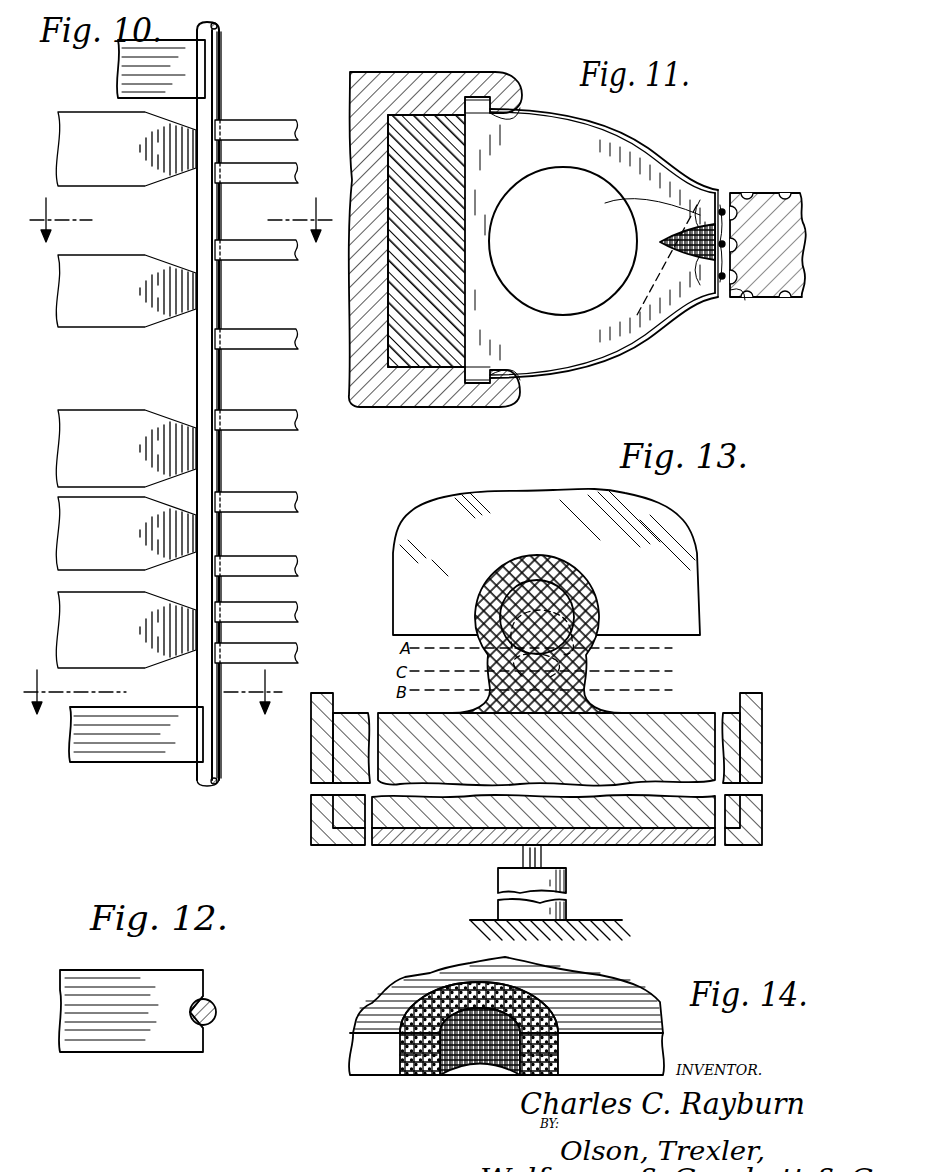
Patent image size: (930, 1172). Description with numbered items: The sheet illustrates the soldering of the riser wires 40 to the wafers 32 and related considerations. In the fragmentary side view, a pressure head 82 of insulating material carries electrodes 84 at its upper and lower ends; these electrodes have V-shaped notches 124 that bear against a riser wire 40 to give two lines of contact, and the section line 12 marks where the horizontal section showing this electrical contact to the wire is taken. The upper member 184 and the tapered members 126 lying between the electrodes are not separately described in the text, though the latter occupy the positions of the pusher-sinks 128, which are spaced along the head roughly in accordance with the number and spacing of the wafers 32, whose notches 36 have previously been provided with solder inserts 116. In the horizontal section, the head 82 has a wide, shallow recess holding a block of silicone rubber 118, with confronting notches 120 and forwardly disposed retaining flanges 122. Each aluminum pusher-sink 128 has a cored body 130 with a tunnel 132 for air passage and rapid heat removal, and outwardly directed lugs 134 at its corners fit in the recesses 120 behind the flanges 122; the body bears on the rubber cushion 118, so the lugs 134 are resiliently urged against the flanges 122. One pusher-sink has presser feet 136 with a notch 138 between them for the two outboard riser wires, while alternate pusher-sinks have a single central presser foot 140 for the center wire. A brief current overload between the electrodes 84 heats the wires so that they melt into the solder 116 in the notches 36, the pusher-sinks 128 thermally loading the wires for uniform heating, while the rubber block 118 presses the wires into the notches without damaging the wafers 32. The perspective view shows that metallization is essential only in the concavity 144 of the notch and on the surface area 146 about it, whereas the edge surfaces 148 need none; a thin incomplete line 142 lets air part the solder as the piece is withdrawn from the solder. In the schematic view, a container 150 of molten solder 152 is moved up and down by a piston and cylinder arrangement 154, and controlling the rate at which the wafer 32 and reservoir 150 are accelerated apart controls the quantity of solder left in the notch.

In FIG. 10, the section line 12 is at (171, 444).
In FIG. 10, the wafer 32 is at (275, 173).
In FIG. 13, the wafer 32 is at (676, 578).
In FIG. 14, the wafer 32 is at (610, 990).
In FIG. 11, the notch 36 is at (758, 195).
In FIG. 13, the notch 36 is at (568, 596).
In FIG. 14, the notch 36 is at (446, 963).
In FIG. 10, the riser wire 40 is at (212, 105).
In FIG. 11, the riser wire 40 is at (722, 208).
In FIG. 12, the riser wire 40 is at (217, 1009).
In FIG. 11, the pressure head 82 is at (400, 82).
In FIG. 10, the electrode 84 is at (138, 762).
In FIG. 12, the electrode 84 is at (127, 1036).
In FIG. 11, the solder insert 116 is at (742, 300).
In FIG. 13, the solder insert 116 is at (598, 596).
In FIG. 11, the silicone rubber block 118 is at (450, 216).
In FIG. 11, the confronting notch 120 is at (470, 105).
In FIG. 11, the retaining flange 122 is at (521, 108).
In FIG. 10, the V-shaped notch 124 is at (205, 58).
In FIG. 12, the V-shaped notch 124 is at (190, 1000).
In FIG. 10, the clamp jaw 126 is at (137, 172).
In FIG. 11, the pusher-sink 128 is at (616, 138).
In FIG. 11, the cored body 130 is at (602, 332).
In FIG. 11, the tunnel 132 is at (606, 203).
In FIG. 11, the lug 134 is at (482, 98).
In FIG. 11, the presser foot 136 is at (704, 200).
In FIG. 11, the notch 138 is at (668, 241).
In FIG. 11, the central presser foot 140 is at (724, 243).
In FIG. 14, the thin line 142 is at (480, 1064).
In FIG. 14, the concavity 144 is at (520, 1005).
In FIG. 14, the surface area 146 is at (432, 1017).
In FIG. 14, the edge surface 148 is at (548, 1060).
In FIG. 13, the container 150 is at (752, 715).
In FIG. 13, the molten solder 152 is at (698, 717).
In FIG. 13, the piston and cylinder arrangement 154 is at (566, 880).
In FIG. 10, the upper support block 184 is at (128, 80).